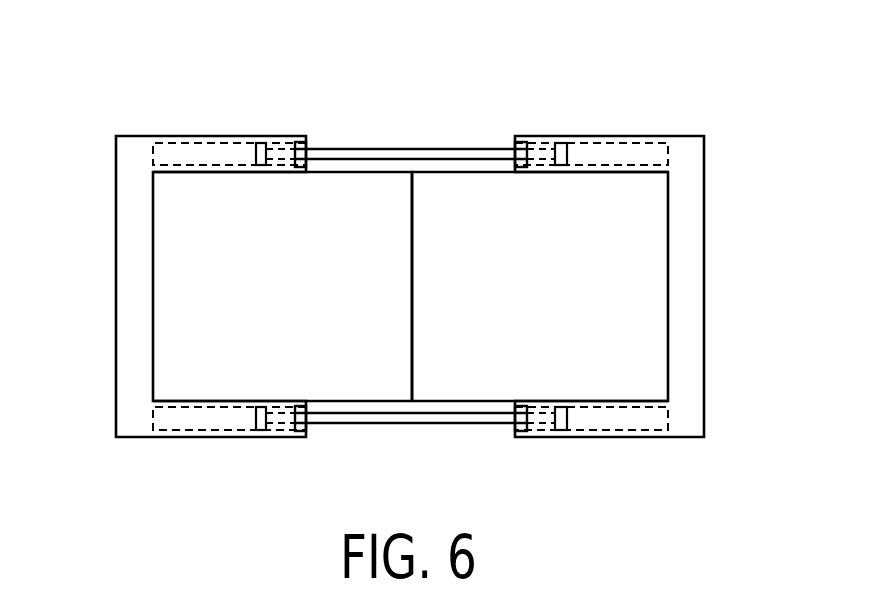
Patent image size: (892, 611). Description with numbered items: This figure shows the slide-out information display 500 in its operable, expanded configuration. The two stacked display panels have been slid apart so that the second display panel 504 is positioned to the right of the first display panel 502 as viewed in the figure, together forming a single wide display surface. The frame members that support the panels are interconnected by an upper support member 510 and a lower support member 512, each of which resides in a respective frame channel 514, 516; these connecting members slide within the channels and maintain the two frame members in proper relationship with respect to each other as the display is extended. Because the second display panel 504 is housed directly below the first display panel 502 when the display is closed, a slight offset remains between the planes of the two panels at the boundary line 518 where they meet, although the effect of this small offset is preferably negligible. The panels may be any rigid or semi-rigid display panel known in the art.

The slide-out information display 500 is at (606, 116).
The first display panel 502 is at (175, 367).
The second display panel 504 is at (635, 347).
The upper support member 510 is at (357, 148).
The lower support member 512 is at (412, 425).
The frame channel 514 is at (158, 140).
The frame channel 516 is at (220, 430).
The boundary line 518 is at (412, 268).